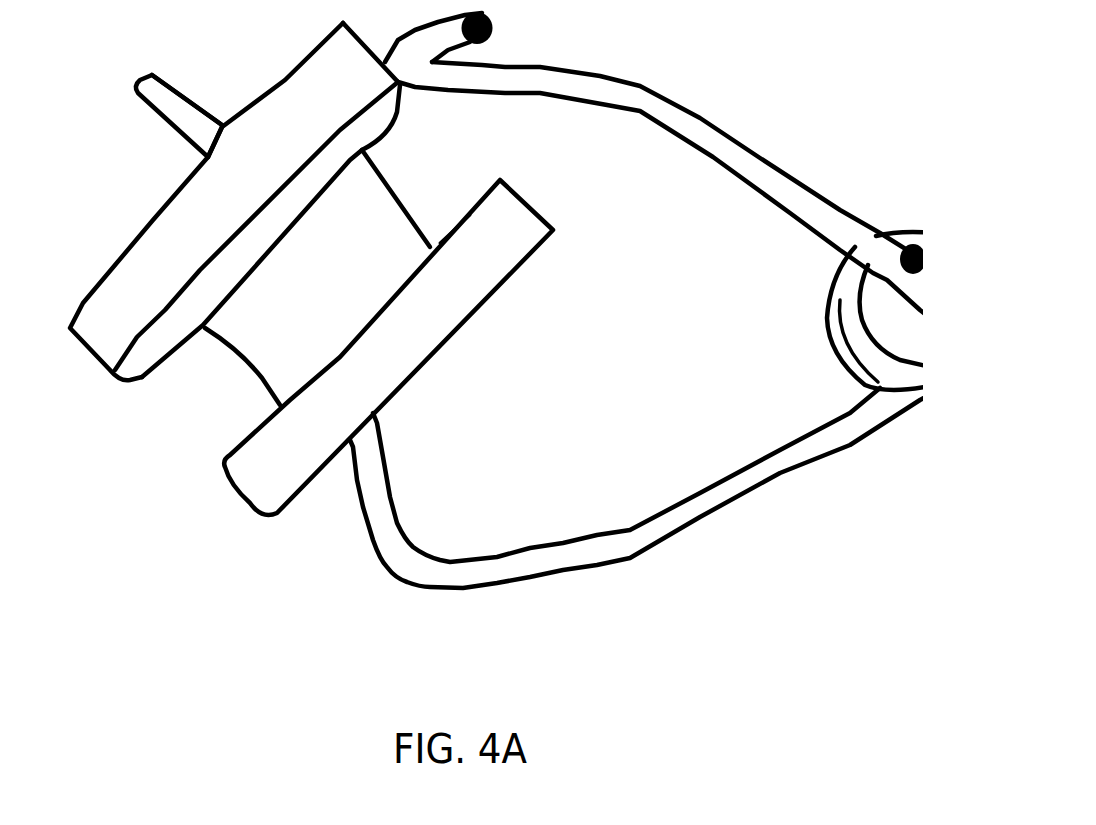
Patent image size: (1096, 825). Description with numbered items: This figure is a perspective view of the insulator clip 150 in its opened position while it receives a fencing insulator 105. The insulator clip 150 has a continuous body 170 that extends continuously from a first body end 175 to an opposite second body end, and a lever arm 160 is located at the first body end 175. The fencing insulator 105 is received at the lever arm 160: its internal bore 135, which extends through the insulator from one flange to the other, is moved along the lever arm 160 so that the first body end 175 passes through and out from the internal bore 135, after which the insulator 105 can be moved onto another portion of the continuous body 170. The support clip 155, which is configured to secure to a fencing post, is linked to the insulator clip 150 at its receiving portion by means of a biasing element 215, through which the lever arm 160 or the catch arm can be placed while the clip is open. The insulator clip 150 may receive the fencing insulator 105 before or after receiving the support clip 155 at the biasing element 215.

The fencing insulator 105 is at (88, 360).
The internal bore 135 is at (207, 155).
The insulator clip 150 is at (730, 134).
The support clip 155 is at (907, 228).
The lever arm 160 is at (222, 120).
The continuous body 170 is at (692, 510).
The first body end 175 is at (207, 116).
The biasing element 215 is at (840, 297).